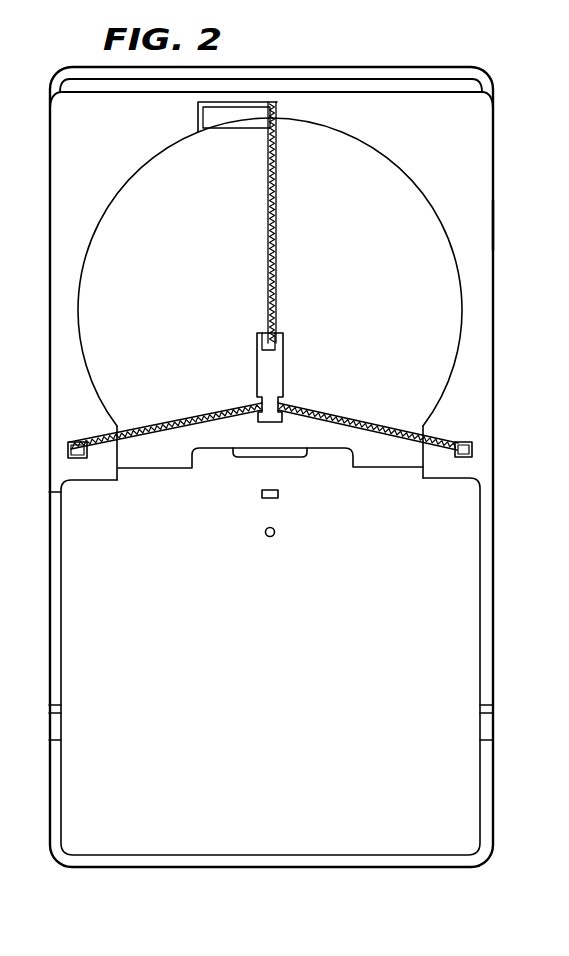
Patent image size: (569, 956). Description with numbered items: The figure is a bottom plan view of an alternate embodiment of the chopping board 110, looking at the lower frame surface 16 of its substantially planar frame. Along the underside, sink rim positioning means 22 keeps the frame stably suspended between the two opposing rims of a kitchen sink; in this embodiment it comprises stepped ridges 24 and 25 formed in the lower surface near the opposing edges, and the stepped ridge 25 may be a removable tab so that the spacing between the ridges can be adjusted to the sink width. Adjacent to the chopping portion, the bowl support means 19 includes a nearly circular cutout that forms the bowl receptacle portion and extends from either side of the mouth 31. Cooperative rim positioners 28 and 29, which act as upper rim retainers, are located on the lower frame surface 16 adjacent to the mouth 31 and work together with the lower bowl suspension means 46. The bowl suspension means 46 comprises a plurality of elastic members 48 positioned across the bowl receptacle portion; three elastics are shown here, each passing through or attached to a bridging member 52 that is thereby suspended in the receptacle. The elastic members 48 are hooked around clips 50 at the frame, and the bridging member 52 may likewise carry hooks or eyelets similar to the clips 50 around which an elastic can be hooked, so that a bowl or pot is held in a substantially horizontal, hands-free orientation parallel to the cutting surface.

The lower frame surface 16 is at (468, 630).
The bowl support means 19 is at (425, 422).
The sink rim positioning means 22 is at (324, 62).
The stepped ridge 24 is at (412, 100).
The stepped ridge 25 is at (488, 728).
The cooperative rim positioner 28 is at (250, 455).
The cooperative rim positioner 29 is at (263, 497).
The mouth 31 is at (148, 470).
The bowl suspension means 46 is at (250, 360).
The elastic member 48 is at (275, 223).
The clip 50 is at (227, 113).
The bridging member 52 is at (282, 342).
The chopping board 110 is at (472, 220).